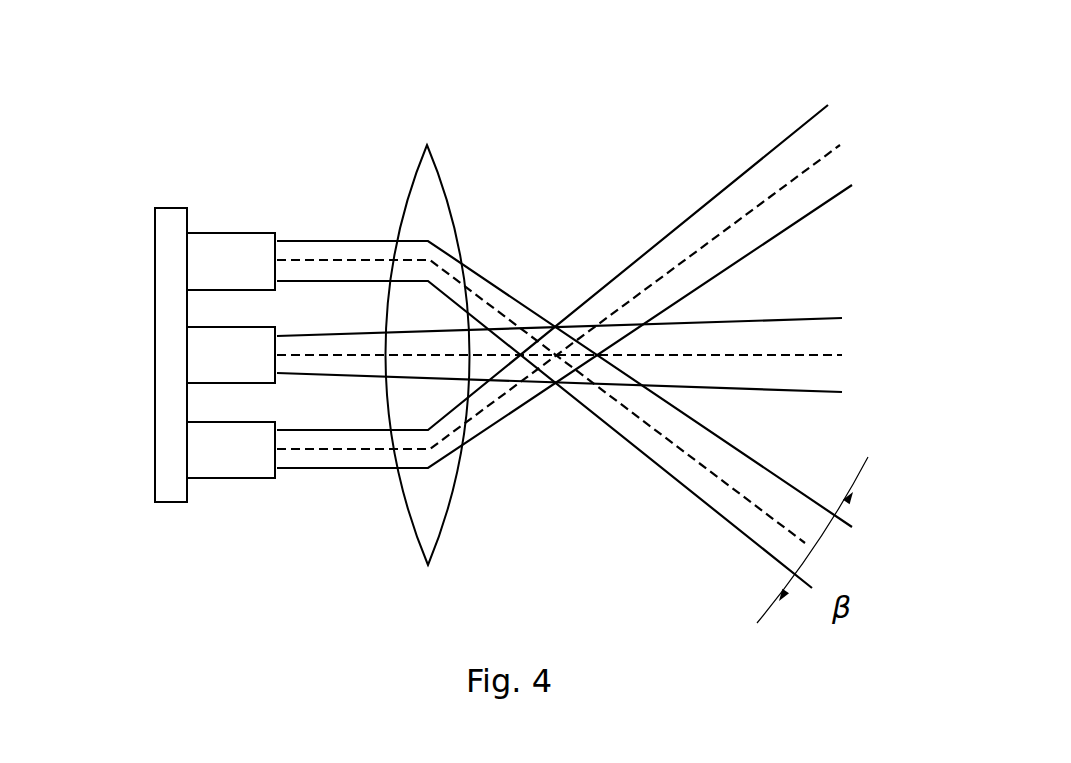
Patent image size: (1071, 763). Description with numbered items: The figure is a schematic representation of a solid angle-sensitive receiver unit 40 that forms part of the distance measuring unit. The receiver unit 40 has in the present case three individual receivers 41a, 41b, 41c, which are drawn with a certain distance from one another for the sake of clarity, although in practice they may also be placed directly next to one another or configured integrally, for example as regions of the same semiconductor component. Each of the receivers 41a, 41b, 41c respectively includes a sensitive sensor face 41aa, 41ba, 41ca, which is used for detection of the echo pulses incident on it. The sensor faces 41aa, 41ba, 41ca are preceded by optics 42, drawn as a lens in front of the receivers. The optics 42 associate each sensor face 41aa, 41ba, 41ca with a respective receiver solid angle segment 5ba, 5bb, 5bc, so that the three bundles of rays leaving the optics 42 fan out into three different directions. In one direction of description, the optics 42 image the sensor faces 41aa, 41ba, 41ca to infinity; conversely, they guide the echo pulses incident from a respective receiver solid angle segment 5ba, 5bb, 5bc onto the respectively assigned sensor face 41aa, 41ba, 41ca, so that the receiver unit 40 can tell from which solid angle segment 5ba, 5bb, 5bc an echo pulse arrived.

The solid angle-sensitive receiver unit 40 is at (149, 187).
The individual receiver 41a is at (228, 248).
The sensitive sensor face 41aa is at (278, 238).
The individual receiver 41b is at (231, 362).
The sensitive sensor face 41ba is at (278, 330).
The individual receiver 41c is at (225, 456).
The sensitive sensor face 41ca is at (278, 473).
The optics 42 is at (439, 220).
The receiver solid angle segment 5ba is at (697, 503).
The receiver solid angle segment 5bb is at (783, 343).
The receiver solid angle segment 5bc is at (722, 218).